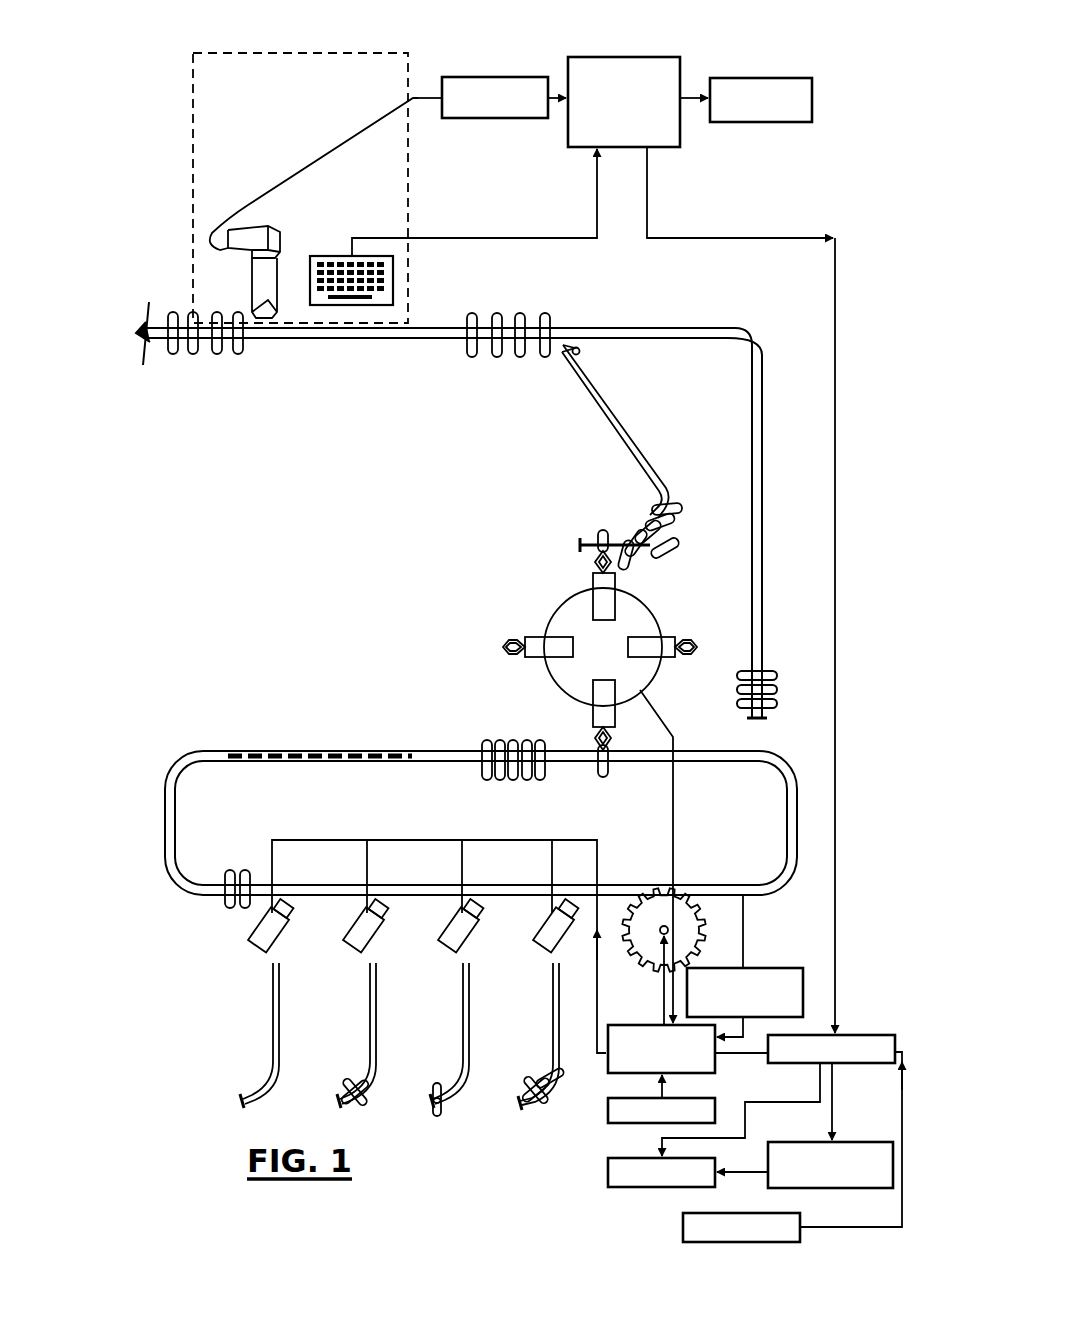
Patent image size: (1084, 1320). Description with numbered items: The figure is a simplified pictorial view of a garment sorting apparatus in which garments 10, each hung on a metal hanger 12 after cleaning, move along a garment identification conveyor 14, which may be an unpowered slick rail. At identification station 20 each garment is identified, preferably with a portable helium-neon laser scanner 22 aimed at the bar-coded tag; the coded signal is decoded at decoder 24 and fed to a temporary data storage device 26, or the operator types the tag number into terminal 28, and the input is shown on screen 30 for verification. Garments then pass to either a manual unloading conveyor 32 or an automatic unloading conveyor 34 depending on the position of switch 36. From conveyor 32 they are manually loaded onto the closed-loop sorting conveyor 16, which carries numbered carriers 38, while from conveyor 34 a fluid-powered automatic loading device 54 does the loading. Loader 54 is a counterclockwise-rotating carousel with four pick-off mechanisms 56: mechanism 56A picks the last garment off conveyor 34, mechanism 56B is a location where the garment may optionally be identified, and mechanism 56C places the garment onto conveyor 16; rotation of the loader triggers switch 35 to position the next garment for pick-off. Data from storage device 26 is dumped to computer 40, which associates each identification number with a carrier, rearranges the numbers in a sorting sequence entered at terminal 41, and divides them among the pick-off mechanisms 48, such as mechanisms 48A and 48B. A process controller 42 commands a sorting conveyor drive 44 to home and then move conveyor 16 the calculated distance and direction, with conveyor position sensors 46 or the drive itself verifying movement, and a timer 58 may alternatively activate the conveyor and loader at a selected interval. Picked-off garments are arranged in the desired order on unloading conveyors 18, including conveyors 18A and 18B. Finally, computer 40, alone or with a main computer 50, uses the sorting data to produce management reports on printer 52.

The garments 10 is at (495, 355).
The metal hanger 12 is at (220, 335).
The garment identification conveyor 14 is at (388, 338).
The closed-loop sorting conveyor 16 is at (435, 750).
The unloading conveyors 18 is at (270, 1031).
The unloading conveyor 18A is at (552, 1042).
The unloading conveyor 18B is at (379, 1036).
The identification station 20 is at (272, 50).
The portable helium-neon laser scanner 22 is at (278, 226).
The decoder 24 is at (490, 76).
The temporary data storage device 26 is at (617, 56).
The terminal 28 is at (393, 270).
The screen 30 is at (748, 77).
The manual unloading conveyor 32 is at (752, 424).
The automatic unloading conveyor 34 is at (622, 417).
The switch 35 is at (673, 551).
The switch 36 is at (573, 354).
The carriers 38 is at (246, 748).
The computer 40 is at (892, 1035).
The terminal 41 is at (683, 1226).
The process controller 42 is at (608, 1033).
The sorting conveyor drive 44 is at (640, 948).
The conveyor position sensors 46 is at (772, 968).
The pick-off mechanisms 48 is at (262, 918).
The pick-off mechanism 48A is at (548, 918).
The pick-off mechanism 48B is at (455, 918).
The main computer 50 is at (880, 1188).
The printer 52 is at (608, 1169).
The fluid-powered automatic loading device 54 is at (562, 612).
The pick-off mechanisms 56 is at (665, 650).
The pick-off mechanism 56A is at (608, 592).
The pick-off mechanism 56B is at (535, 640).
The pick-off mechanism 56C is at (598, 775).
The timer 58 is at (608, 1112).